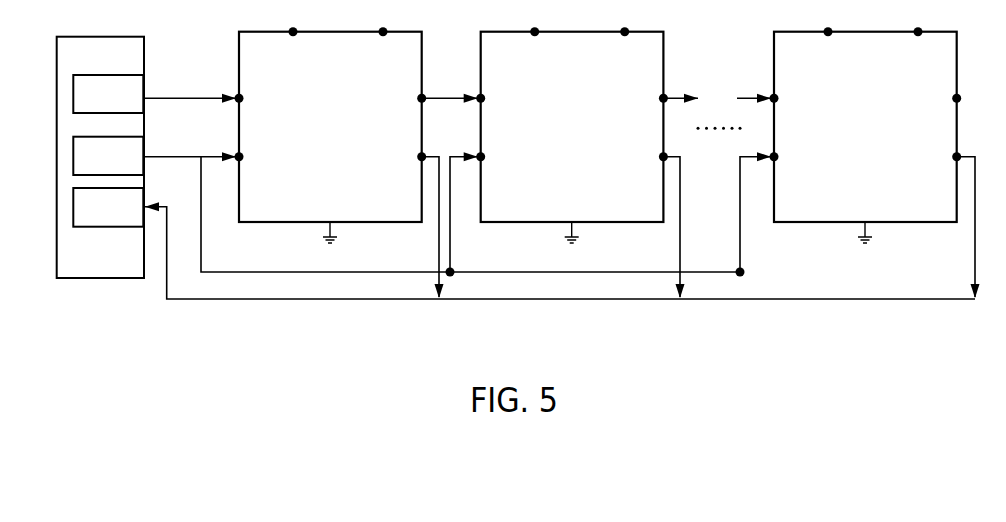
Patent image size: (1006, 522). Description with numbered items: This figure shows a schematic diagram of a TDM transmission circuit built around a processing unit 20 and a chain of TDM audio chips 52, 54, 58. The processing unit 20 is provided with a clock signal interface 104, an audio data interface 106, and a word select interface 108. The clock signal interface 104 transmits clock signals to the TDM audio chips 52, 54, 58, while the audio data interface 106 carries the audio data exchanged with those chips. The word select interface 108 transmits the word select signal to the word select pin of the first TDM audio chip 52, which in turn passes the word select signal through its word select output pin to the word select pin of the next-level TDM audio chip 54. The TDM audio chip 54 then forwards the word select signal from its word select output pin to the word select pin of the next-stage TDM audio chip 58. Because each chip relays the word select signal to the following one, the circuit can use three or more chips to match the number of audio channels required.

The processing unit 20 is at (55, 208).
The word select interface 108 is at (156, 94).
The clock signal interface 104 is at (423, 207).
The audio data interface 106 is at (526, 228).
The TDM audio chip 52 is at (235, 209).
The TDM audio chip 54 is at (500, 223).
The TDM audio chip 58 is at (788, 225).